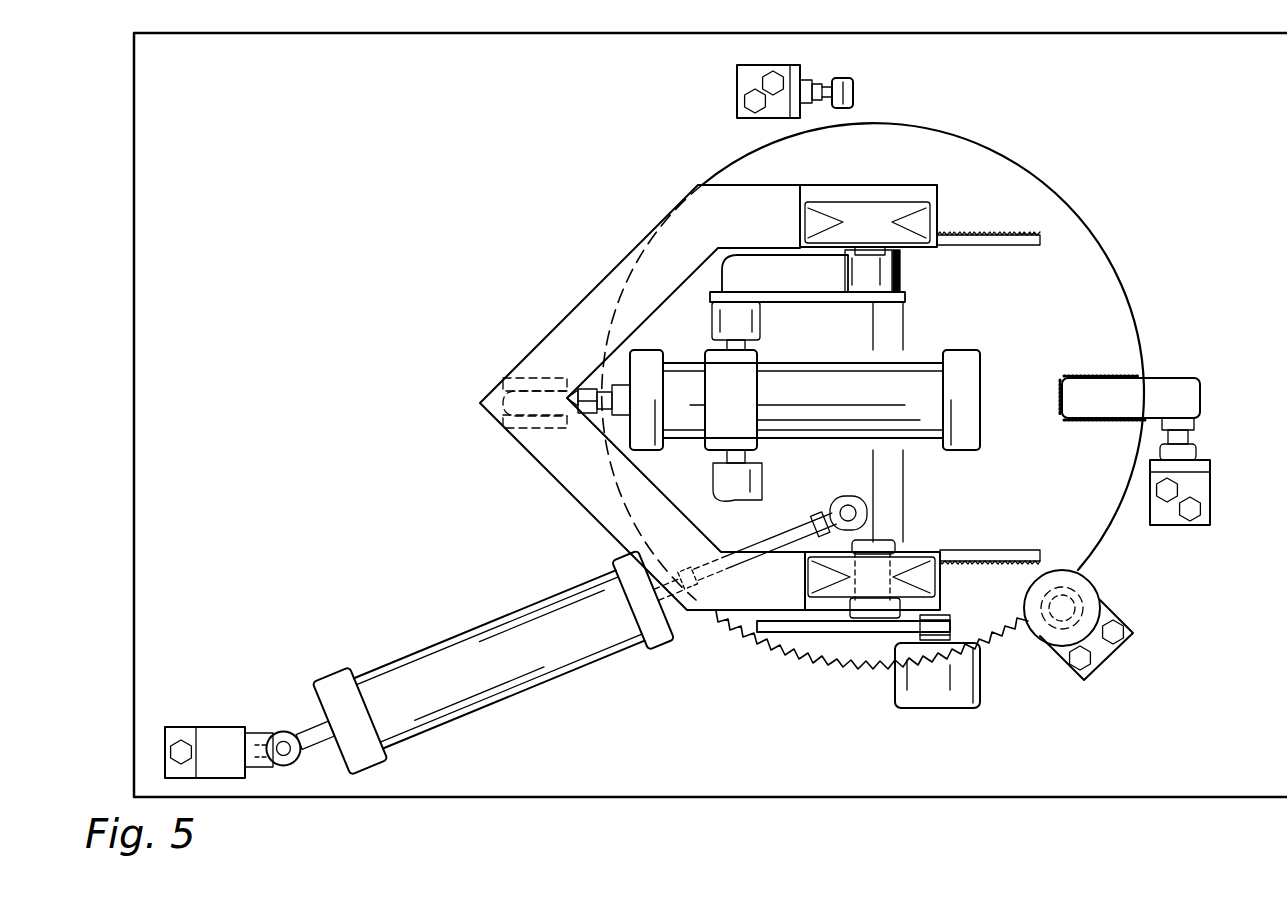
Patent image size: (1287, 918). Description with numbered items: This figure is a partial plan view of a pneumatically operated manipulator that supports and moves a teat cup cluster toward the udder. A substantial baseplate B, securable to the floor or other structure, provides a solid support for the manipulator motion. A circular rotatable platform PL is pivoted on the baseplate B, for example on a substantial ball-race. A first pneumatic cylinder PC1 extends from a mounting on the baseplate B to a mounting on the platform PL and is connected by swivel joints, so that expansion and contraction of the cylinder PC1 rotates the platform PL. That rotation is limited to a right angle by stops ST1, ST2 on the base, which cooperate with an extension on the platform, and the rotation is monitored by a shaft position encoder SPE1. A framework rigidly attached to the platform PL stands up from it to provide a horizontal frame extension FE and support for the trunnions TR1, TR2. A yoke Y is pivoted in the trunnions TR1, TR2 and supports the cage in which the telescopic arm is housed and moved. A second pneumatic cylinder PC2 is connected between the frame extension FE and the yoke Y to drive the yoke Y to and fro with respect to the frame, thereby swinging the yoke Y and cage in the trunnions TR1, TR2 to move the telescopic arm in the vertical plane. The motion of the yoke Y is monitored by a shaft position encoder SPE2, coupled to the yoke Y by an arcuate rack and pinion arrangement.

The baseplate B is at (1206, 124).
The rotatable platform PL is at (1110, 292).
The stop ST2 is at (858, 89).
The trunnion TR1 is at (872, 210).
The yoke Y is at (780, 265).
The frame extension FE is at (575, 318).
The second pneumatic cylinder PC2 is at (796, 425).
The stop ST1 is at (1206, 424).
The trunnion TR2 is at (903, 566).
The shaft position encoder SPE2 is at (882, 680).
The shaft position encoder SPE1 is at (1100, 593).
The first pneumatic cylinder PC1 is at (545, 652).